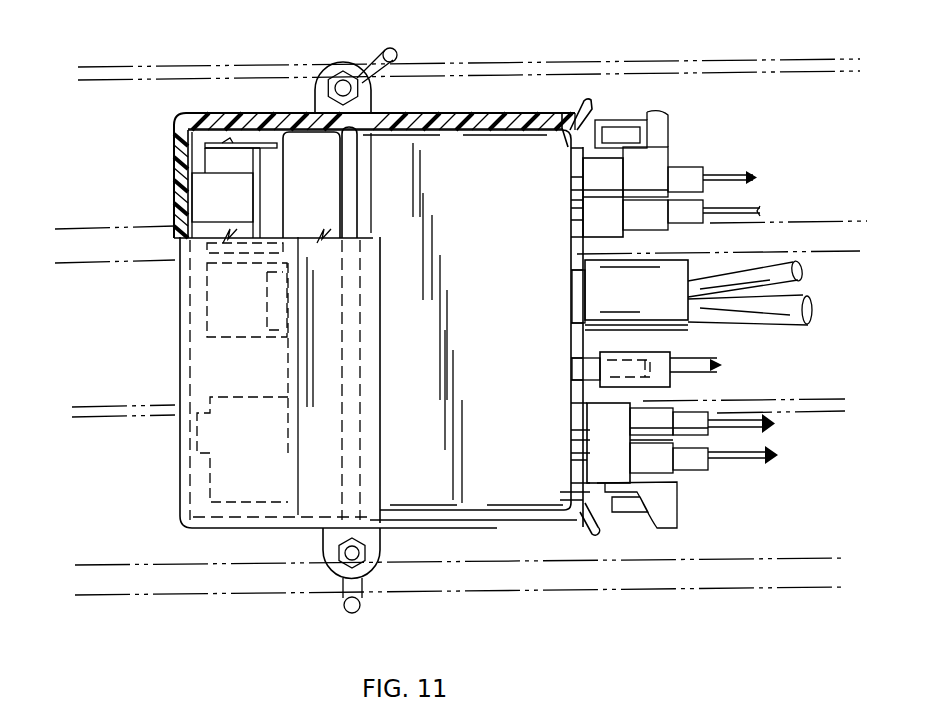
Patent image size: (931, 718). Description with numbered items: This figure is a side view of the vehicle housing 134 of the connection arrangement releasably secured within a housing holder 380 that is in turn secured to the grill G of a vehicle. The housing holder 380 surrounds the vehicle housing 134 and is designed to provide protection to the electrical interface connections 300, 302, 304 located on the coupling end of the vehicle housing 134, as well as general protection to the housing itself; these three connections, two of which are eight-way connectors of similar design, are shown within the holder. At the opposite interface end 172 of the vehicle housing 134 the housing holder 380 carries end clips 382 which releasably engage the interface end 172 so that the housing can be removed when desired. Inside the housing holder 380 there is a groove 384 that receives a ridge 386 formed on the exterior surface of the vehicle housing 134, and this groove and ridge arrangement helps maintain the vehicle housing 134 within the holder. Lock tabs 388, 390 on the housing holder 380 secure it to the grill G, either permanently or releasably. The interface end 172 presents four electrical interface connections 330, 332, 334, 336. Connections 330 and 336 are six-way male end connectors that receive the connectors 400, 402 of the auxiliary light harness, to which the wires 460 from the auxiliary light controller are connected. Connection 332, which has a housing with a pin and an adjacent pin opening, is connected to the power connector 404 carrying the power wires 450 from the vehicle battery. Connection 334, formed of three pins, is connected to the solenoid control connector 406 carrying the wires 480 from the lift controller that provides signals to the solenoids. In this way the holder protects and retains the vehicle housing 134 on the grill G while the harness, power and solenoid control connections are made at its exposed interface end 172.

The housing holder 380 is at (241, 112).
The lock tab 388 is at (386, 48).
The lock tab 390 is at (361, 608).
The vehicle housing 134 is at (476, 134).
The end clips 382 is at (573, 597).
The groove 384 is at (350, 128).
The ridge 386 is at (350, 215).
The electrical interface connection 300 is at (190, 183).
The electrical interface connection 302 is at (210, 308).
The electrical interface connection 304 is at (195, 461).
The electrical interface connection 330 is at (572, 218).
The electrical interface connection 332 is at (573, 305).
The electrical interface connection 334 is at (573, 377).
The electrical interface connection 336 is at (573, 462).
The interface end 172 is at (574, 178).
The connector 400 is at (694, 163).
The connector 402 is at (700, 473).
The power connector 404 is at (692, 264).
The solenoid control connector 406 is at (675, 352).
The power wires 450 is at (797, 300).
The wires 460 is at (780, 487).
The wires 480 is at (716, 366).
The grill G is at (663, 60).